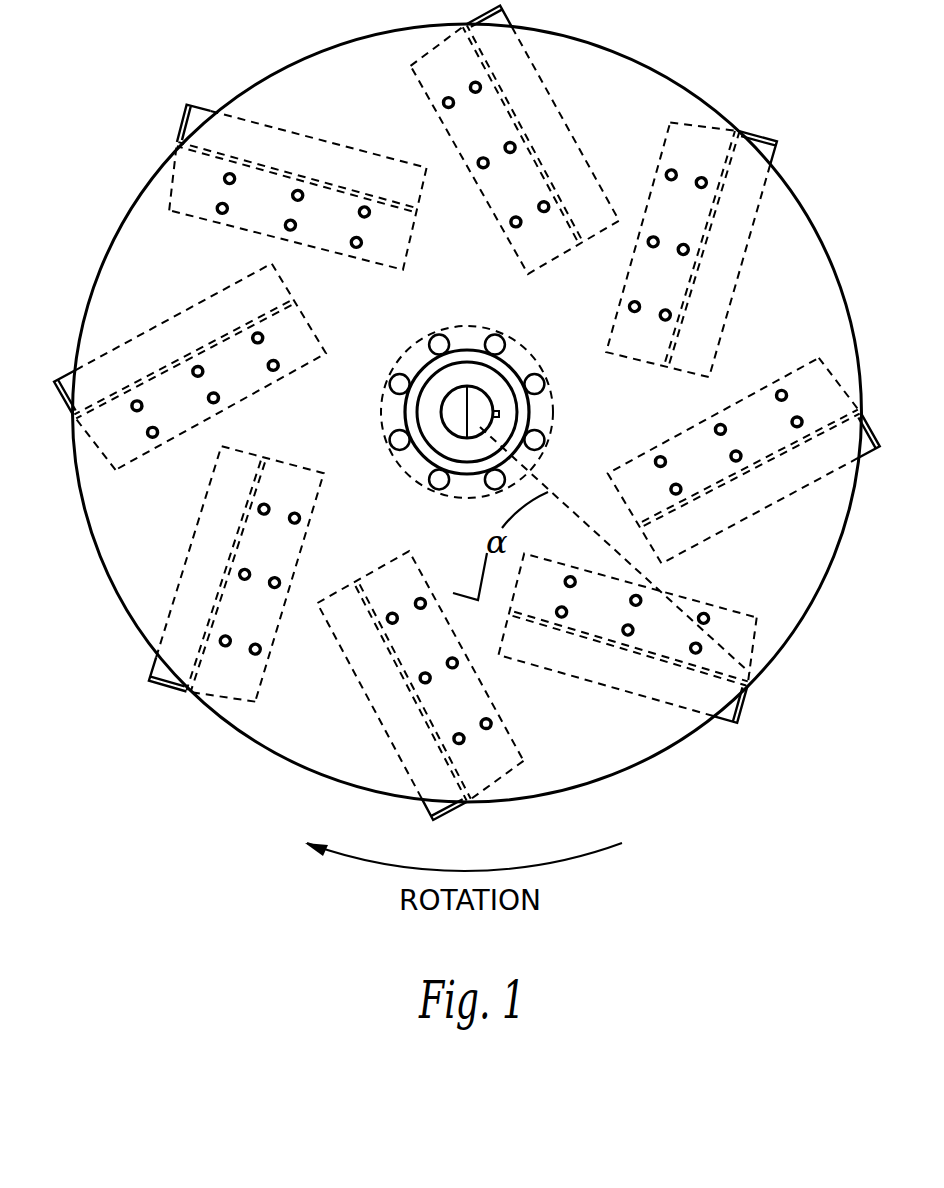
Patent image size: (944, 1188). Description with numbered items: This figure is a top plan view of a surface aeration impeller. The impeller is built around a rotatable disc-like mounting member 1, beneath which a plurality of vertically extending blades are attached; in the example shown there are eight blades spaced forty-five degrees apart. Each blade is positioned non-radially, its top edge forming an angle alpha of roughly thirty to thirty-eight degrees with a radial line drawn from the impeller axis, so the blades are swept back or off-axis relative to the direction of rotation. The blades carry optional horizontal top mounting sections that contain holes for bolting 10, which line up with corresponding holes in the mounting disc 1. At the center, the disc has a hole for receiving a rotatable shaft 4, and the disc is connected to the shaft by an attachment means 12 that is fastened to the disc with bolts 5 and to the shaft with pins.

The disc-like mounting member 1 is at (488, 294).
The rotatable shaft 4 is at (478, 407).
The bolts 5 is at (531, 440).
The holes for bolting 10 is at (272, 365).
The attachment means 12 is at (430, 417).